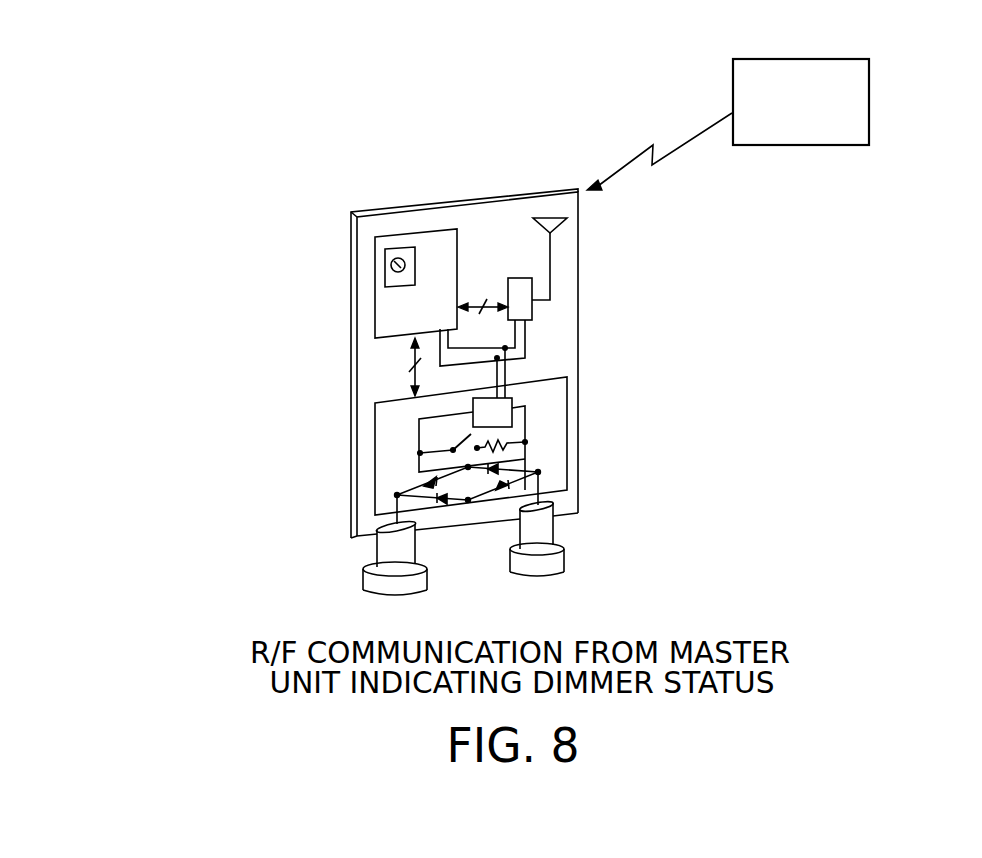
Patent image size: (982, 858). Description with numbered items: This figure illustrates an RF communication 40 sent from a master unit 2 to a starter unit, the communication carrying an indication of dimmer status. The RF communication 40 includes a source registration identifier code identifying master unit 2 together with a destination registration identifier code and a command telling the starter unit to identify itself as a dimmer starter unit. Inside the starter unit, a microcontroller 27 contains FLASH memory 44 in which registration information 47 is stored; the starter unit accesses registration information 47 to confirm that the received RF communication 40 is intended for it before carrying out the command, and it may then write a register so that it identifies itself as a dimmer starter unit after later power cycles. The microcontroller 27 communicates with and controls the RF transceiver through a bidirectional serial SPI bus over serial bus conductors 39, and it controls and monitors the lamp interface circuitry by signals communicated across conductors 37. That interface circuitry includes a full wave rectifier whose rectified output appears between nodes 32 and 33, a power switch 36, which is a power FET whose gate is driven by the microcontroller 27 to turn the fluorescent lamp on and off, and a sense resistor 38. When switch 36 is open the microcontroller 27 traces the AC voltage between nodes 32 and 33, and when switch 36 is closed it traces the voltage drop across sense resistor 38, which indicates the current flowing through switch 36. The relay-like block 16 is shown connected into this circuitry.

The master unit 2 is at (801, 102).
The relay 16 is at (481, 420).
The microcontroller integrated circuit 27 is at (375, 330).
The node 32 is at (418, 453).
The node 33 is at (529, 442).
The power switch 36 is at (459, 444).
The conductors 37 is at (413, 367).
The sense resistor 38 is at (508, 438).
The serial bus conductors 39 is at (483, 302).
The RF communication 40 is at (636, 155).
The FLASH memory 44 is at (385, 265).
The registration information 47 is at (398, 264).